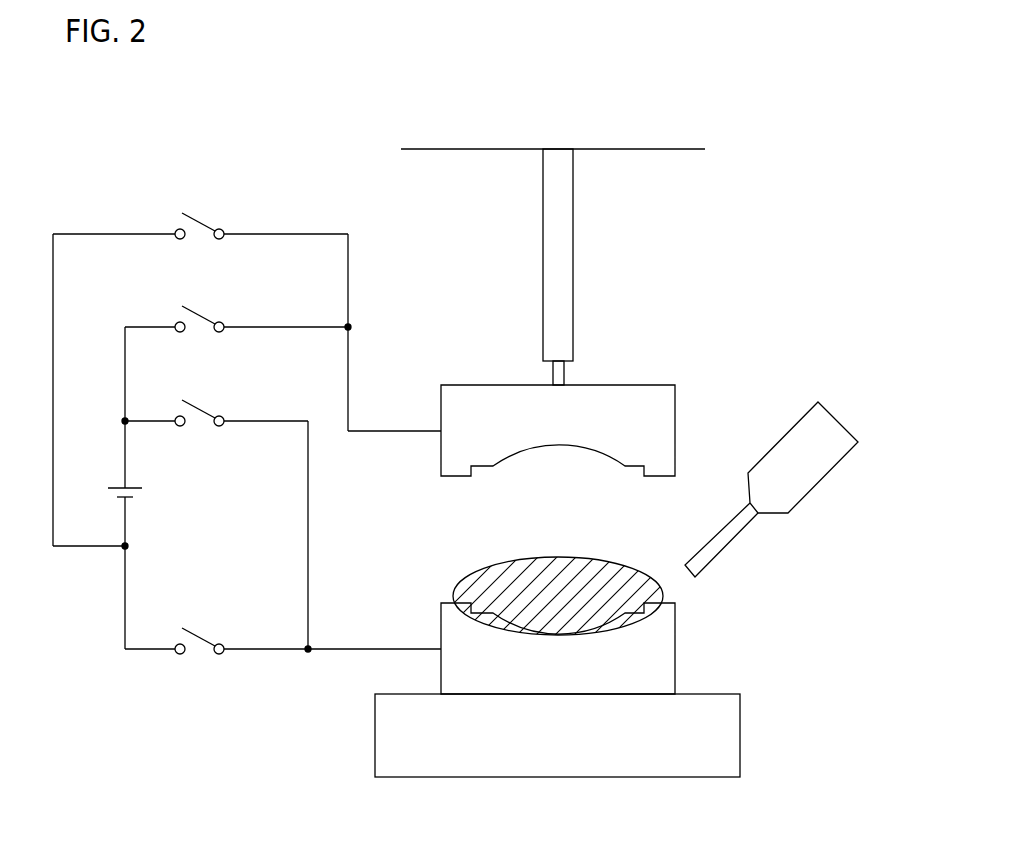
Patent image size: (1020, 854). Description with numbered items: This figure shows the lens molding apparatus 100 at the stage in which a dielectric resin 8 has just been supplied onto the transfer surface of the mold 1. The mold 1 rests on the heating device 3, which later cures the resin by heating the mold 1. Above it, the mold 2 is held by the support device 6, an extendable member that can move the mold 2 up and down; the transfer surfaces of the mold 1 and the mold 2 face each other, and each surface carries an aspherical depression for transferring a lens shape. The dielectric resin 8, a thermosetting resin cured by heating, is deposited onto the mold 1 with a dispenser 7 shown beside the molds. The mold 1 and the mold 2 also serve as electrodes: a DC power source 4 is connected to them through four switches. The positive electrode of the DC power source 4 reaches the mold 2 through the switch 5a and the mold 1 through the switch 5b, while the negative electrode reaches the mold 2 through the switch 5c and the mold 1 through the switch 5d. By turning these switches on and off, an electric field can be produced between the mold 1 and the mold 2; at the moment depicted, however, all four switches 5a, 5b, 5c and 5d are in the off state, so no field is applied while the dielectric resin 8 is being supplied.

The lens molding apparatus 100 is at (688, 88).
The mold 1 is at (676, 645).
The mold 2 is at (676, 412).
The heating device 3 is at (741, 740).
The DC power source 4 is at (129, 488).
The switch 5a is at (198, 318).
The switch 5b is at (198, 412).
The switch 5c is at (198, 225).
The switch 5d is at (198, 640).
The support device 6 is at (574, 297).
The dispenser 7 is at (793, 423).
The dielectric resin 8 is at (502, 566).